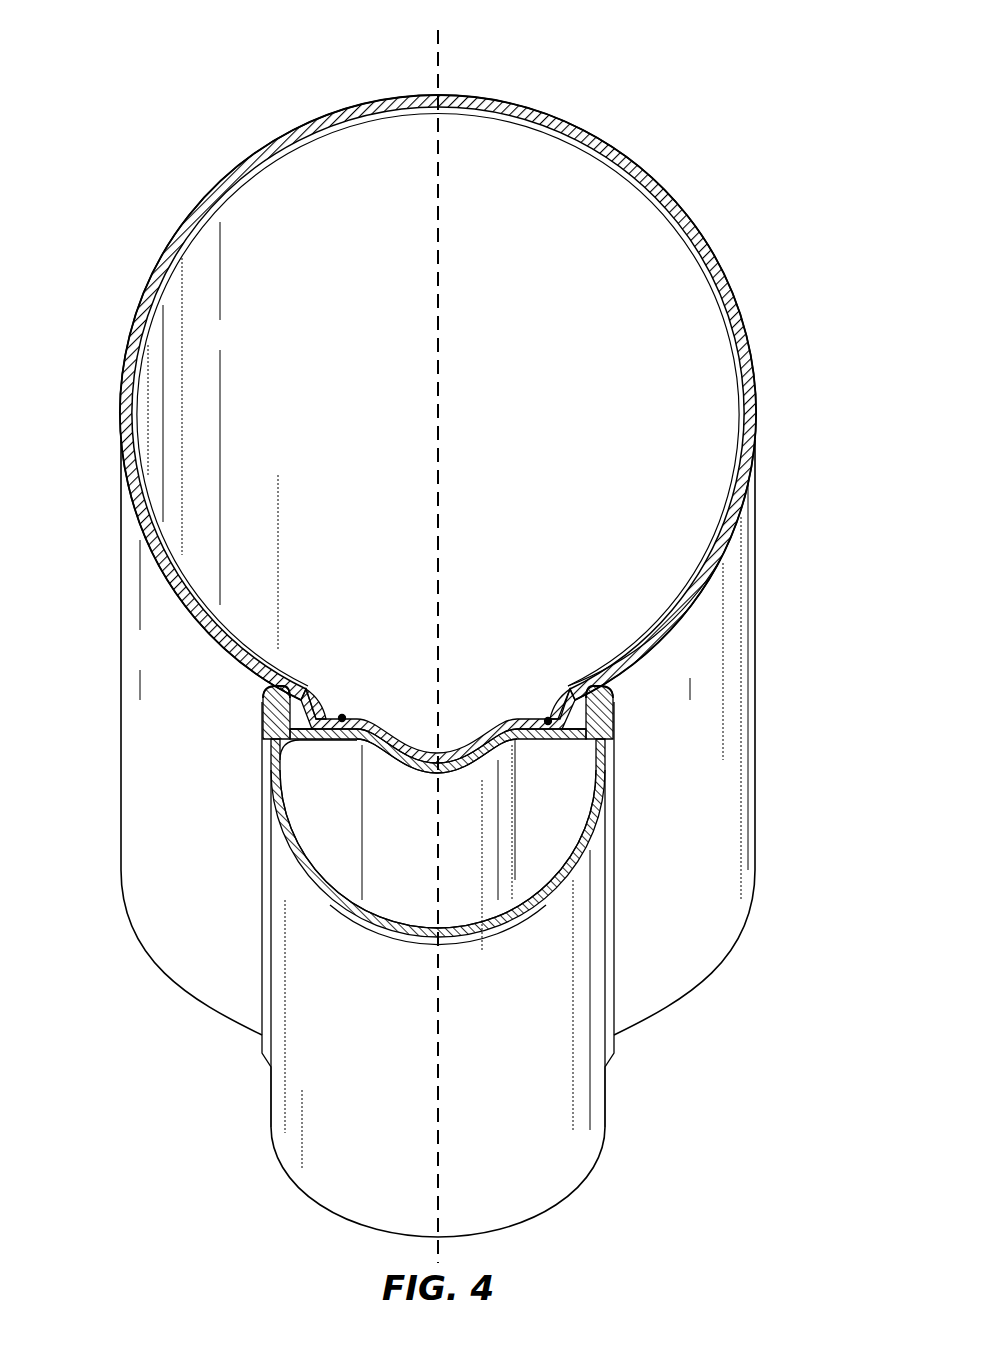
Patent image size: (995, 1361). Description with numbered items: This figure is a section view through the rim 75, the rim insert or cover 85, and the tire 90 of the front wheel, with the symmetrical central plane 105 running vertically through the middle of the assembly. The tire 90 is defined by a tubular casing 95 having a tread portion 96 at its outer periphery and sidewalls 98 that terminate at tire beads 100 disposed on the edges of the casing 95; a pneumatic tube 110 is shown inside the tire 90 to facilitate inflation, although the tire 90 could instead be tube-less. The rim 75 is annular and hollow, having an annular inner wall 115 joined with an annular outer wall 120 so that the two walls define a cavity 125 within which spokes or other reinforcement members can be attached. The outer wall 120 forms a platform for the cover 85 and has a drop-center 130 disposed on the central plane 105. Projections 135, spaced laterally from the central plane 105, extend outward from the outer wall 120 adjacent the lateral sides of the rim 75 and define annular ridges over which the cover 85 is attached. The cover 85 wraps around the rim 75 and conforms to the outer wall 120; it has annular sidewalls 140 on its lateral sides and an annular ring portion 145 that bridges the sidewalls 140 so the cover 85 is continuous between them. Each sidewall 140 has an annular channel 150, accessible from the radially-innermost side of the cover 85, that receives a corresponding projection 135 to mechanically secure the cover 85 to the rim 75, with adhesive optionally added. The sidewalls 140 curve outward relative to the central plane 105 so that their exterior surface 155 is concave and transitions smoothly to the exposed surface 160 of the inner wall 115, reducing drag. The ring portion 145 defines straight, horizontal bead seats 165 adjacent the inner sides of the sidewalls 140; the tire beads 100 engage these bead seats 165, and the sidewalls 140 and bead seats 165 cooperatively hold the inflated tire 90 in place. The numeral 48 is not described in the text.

The wheel 48 is at (134, 606).
The rim 75 is at (603, 1130).
The rim insert or cover 85 is at (262, 700).
The tire 90 is at (636, 166).
The tubular casing 95 is at (697, 592).
The tread portion 96 is at (486, 100).
The sidewalls 98 is at (735, 678).
The tire beads 100 is at (336, 714).
The central plane 105 is at (440, 30).
The pneumatic tube 110 is at (708, 551).
The annular inner wall 115 is at (372, 917).
The annular outer wall 120 is at (333, 740).
The cavity 125 is at (560, 818).
The drop-center 130 is at (430, 768).
The projections 135 is at (290, 729).
The annular sidewalls 140 is at (262, 690).
The annular ring portion 145 is at (412, 745).
The annular groove or channel 150 is at (285, 719).
The exterior surface 155 is at (271, 775).
The exterior or exposed surface 160 is at (283, 910).
The bead seats 165 is at (344, 716).